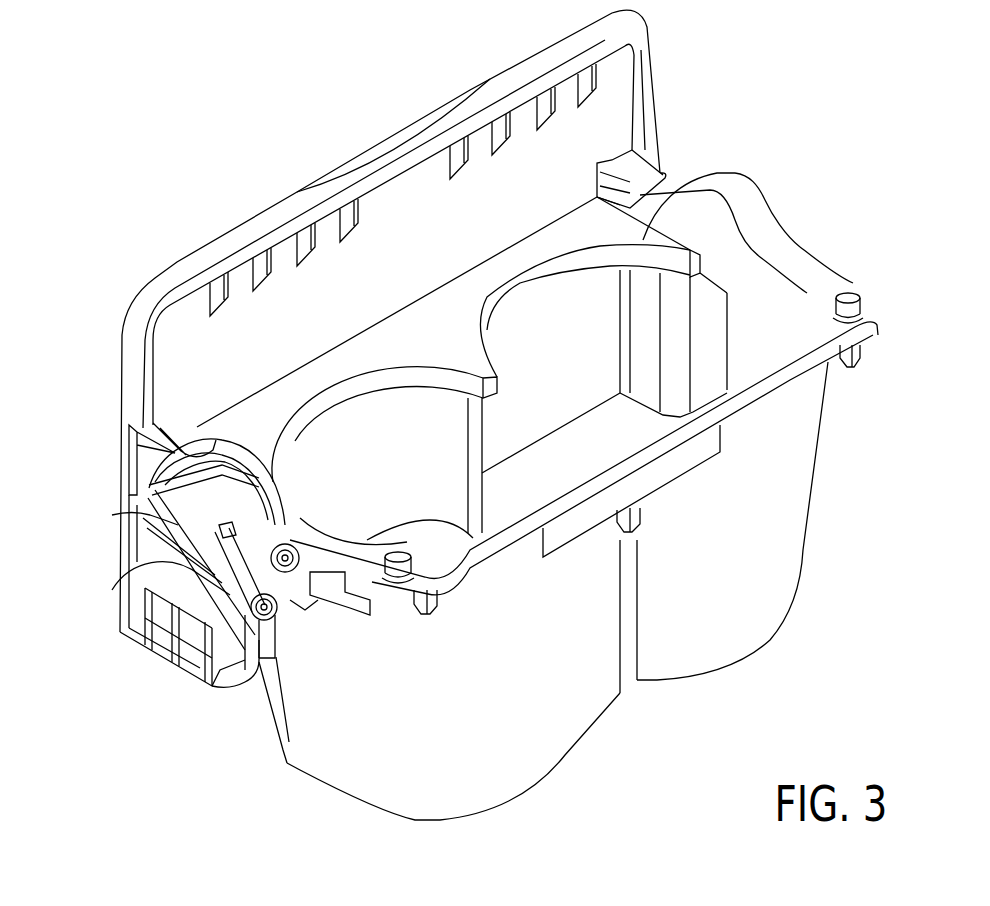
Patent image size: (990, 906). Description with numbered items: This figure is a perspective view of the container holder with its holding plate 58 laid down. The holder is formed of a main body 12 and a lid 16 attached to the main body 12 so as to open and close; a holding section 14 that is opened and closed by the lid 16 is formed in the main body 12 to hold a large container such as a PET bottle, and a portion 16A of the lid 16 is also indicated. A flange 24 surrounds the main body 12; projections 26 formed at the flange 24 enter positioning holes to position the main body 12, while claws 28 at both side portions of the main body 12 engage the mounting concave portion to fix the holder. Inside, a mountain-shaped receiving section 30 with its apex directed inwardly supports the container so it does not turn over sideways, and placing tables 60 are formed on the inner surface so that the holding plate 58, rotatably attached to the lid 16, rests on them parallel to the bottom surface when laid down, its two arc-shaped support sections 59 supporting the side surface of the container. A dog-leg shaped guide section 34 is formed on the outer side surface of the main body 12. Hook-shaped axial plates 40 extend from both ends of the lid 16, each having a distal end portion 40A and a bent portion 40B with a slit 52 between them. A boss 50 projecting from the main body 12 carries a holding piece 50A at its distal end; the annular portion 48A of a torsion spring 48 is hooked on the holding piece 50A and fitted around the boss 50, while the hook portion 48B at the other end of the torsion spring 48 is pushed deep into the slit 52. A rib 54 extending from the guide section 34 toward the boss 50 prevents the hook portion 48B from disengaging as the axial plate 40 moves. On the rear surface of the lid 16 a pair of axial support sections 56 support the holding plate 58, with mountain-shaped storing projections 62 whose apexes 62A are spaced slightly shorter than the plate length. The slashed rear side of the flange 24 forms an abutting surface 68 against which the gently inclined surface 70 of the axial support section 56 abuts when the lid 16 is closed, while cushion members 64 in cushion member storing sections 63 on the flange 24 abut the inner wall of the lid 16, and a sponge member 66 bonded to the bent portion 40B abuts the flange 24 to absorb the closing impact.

The main body 12 is at (843, 265).
The holding section 14 is at (572, 401).
The lid 16 is at (657, 95).
The grip portion 16A is at (377, 125).
The flange 24 is at (787, 257).
The projections 26 is at (437, 603).
The claws 28 is at (363, 613).
The receiving section 30 is at (618, 447).
The guide section 34 is at (277, 490).
The axial plate 40 is at (147, 660).
The distal end portion 40A is at (112, 515).
The bent portion 40B is at (240, 665).
The torsion spring 48 is at (293, 608).
The annular portion 48A is at (305, 610).
The hook portion 48B is at (153, 557).
The boss 50 is at (297, 524).
The holding piece 50A is at (333, 540).
The slit 52 is at (237, 462).
The rib 54 is at (253, 545).
The axial support sections 56 is at (615, 143).
The holding plate 58 is at (703, 176).
The support section 59 is at (598, 262).
The placing tables 60 is at (708, 280).
The storing projections 62 is at (598, 178).
The apexes 62A is at (598, 190).
The cushion member storing sections 63 is at (417, 576).
The cushion members 64 is at (400, 556).
The sponge member 66 is at (147, 588).
The abutting surface 68 is at (757, 220).
The inclined surface 70 is at (147, 481).